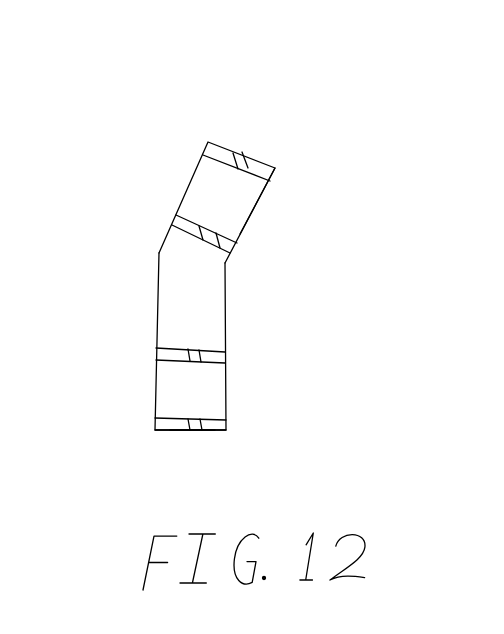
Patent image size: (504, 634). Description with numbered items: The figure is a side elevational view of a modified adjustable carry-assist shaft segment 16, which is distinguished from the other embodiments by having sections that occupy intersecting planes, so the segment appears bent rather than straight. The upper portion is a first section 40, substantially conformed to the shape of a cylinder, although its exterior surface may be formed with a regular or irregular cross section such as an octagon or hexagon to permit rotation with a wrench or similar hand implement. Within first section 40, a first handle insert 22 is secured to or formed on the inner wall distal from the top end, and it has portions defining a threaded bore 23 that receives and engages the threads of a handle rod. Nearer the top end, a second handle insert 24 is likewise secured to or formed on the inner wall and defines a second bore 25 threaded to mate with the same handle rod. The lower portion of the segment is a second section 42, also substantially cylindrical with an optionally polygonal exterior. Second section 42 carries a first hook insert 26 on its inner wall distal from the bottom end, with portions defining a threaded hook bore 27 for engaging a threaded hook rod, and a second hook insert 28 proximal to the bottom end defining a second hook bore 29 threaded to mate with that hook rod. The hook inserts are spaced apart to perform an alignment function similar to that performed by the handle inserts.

The modified shaft segment 16 is at (411, 172).
The first handle insert 22 is at (187, 186).
The threaded bore 23 is at (203, 234).
The second handle insert 24 is at (250, 156).
The second bore 25 is at (245, 152).
The first hook insert 26 is at (226, 362).
The threaded hook bore 27 is at (192, 348).
The second hook insert 28 is at (227, 423).
The second hook bore 29 is at (197, 433).
The first section 40 is at (250, 216).
The second section 42 is at (226, 320).